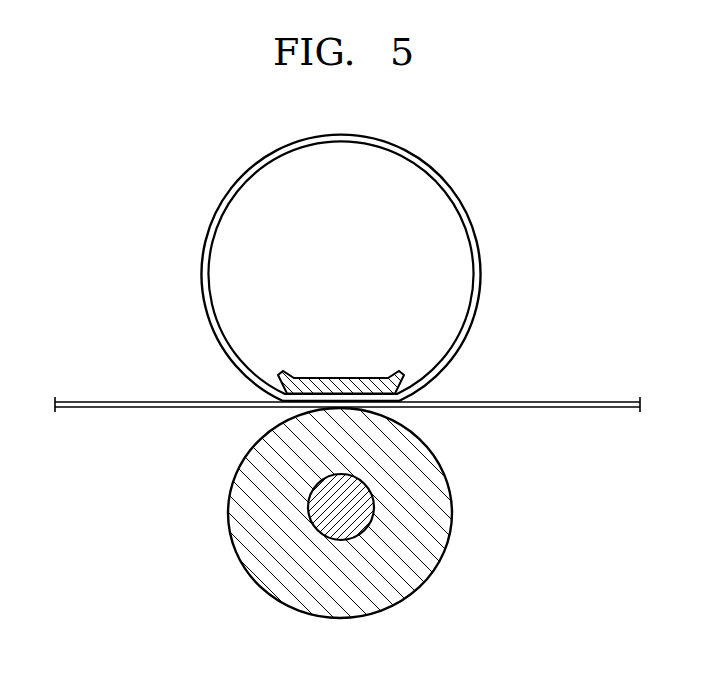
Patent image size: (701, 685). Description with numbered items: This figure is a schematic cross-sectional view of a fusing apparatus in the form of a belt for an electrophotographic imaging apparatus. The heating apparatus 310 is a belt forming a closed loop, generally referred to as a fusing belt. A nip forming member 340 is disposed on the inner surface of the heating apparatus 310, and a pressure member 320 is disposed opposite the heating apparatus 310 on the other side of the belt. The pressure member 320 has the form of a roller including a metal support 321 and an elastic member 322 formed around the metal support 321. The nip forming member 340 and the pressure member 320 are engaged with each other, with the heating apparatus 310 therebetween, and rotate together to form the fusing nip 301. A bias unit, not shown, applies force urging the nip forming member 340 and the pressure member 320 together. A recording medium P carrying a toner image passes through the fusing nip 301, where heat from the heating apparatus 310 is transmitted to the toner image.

The heating apparatus 310 is at (480, 270).
The nip forming member 340 is at (293, 377).
The pressure member 320 is at (345, 512).
The elastic member 322 is at (425, 475).
The metal support 321 is at (366, 513).
The fusing nip 301 is at (448, 389).
The recording medium P is at (102, 404).